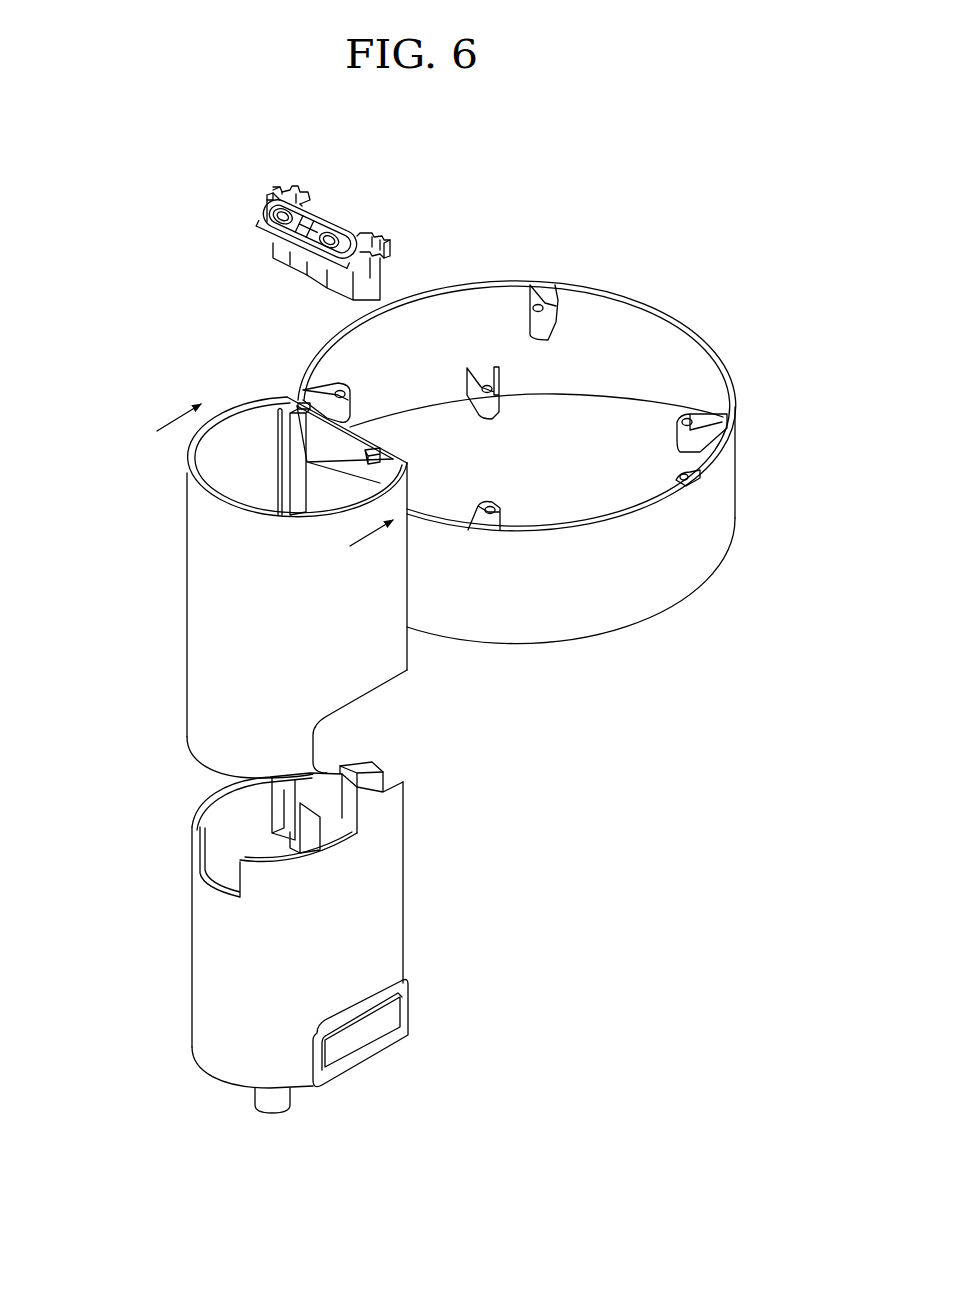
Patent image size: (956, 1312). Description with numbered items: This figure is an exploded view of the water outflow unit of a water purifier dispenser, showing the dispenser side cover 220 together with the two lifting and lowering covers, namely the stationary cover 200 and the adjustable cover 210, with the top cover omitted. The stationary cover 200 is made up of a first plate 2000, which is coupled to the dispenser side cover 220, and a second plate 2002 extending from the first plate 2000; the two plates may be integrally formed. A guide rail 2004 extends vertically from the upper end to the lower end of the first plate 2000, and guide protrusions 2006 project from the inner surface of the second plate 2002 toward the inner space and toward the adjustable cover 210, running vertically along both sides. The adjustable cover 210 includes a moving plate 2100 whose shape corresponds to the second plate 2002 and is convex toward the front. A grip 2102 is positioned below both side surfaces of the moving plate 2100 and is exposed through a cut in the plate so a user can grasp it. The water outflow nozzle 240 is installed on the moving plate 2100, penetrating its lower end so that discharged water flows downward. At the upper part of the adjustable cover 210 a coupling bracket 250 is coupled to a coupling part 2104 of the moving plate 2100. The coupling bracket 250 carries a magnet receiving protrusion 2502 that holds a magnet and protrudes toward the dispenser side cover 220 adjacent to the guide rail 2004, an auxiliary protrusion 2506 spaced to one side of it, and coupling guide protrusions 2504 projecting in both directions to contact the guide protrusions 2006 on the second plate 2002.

The stationary cover 200 is at (260, 558).
The first plate 2000 is at (345, 448).
The second plate 2002 is at (218, 485).
The guide rail 2004 is at (296, 475).
The guide protrusion 2006 is at (282, 430).
The adjustable cover 210 is at (240, 943).
The moving plate 2100 is at (210, 968).
The grip 2102 is at (358, 1038).
The coupling part 2104 is at (308, 793).
The dispenser side cover 220 is at (708, 525).
The water outflow nozzle 240 is at (270, 1103).
The coupling bracket 250 is at (357, 190).
The magnet receiving protrusion 2502 is at (285, 188).
The coupling guide protrusion 2504 is at (271, 192).
The auxiliary protrusion 2506 is at (302, 201).